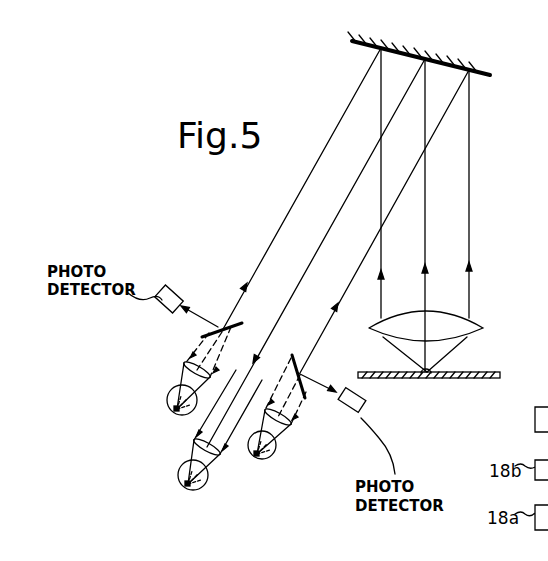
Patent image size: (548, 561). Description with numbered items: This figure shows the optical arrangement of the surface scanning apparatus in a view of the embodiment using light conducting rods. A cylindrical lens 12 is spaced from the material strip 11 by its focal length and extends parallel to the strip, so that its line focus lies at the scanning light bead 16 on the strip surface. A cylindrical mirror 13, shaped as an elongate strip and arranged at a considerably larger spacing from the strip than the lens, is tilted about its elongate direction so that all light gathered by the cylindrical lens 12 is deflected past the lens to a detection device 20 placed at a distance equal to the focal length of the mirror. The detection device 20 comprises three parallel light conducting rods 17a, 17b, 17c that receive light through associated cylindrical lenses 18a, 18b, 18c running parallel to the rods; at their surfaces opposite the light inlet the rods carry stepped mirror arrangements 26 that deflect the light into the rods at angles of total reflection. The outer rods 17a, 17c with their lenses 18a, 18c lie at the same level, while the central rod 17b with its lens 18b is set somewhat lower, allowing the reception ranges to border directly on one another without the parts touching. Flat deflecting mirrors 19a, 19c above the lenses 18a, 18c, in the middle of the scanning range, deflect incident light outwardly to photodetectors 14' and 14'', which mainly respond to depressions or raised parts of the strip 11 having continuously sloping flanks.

The cylindrical mirror 13 is at (488, 73).
The cylindrical lens 12 is at (440, 317).
The scanning light bead 16 is at (428, 372).
The material strip 11 is at (476, 378).
The photodetector 14' is at (171, 279).
The photodetector 14'' is at (373, 405).
The flat deflecting mirror 19a is at (234, 323).
The flat deflecting mirror 19c is at (302, 358).
The cylindrical lens 18a is at (192, 360).
The cylindrical lens 18b is at (222, 456).
The cylindrical lens 18c is at (291, 423).
The light conducting rod 17a is at (186, 414).
The central light conducting rod 17b is at (204, 487).
The light conducting rod 17c is at (276, 452).
The stepped mirror arrangement 26 is at (176, 408).
The detection device 20 is at (338, 446).